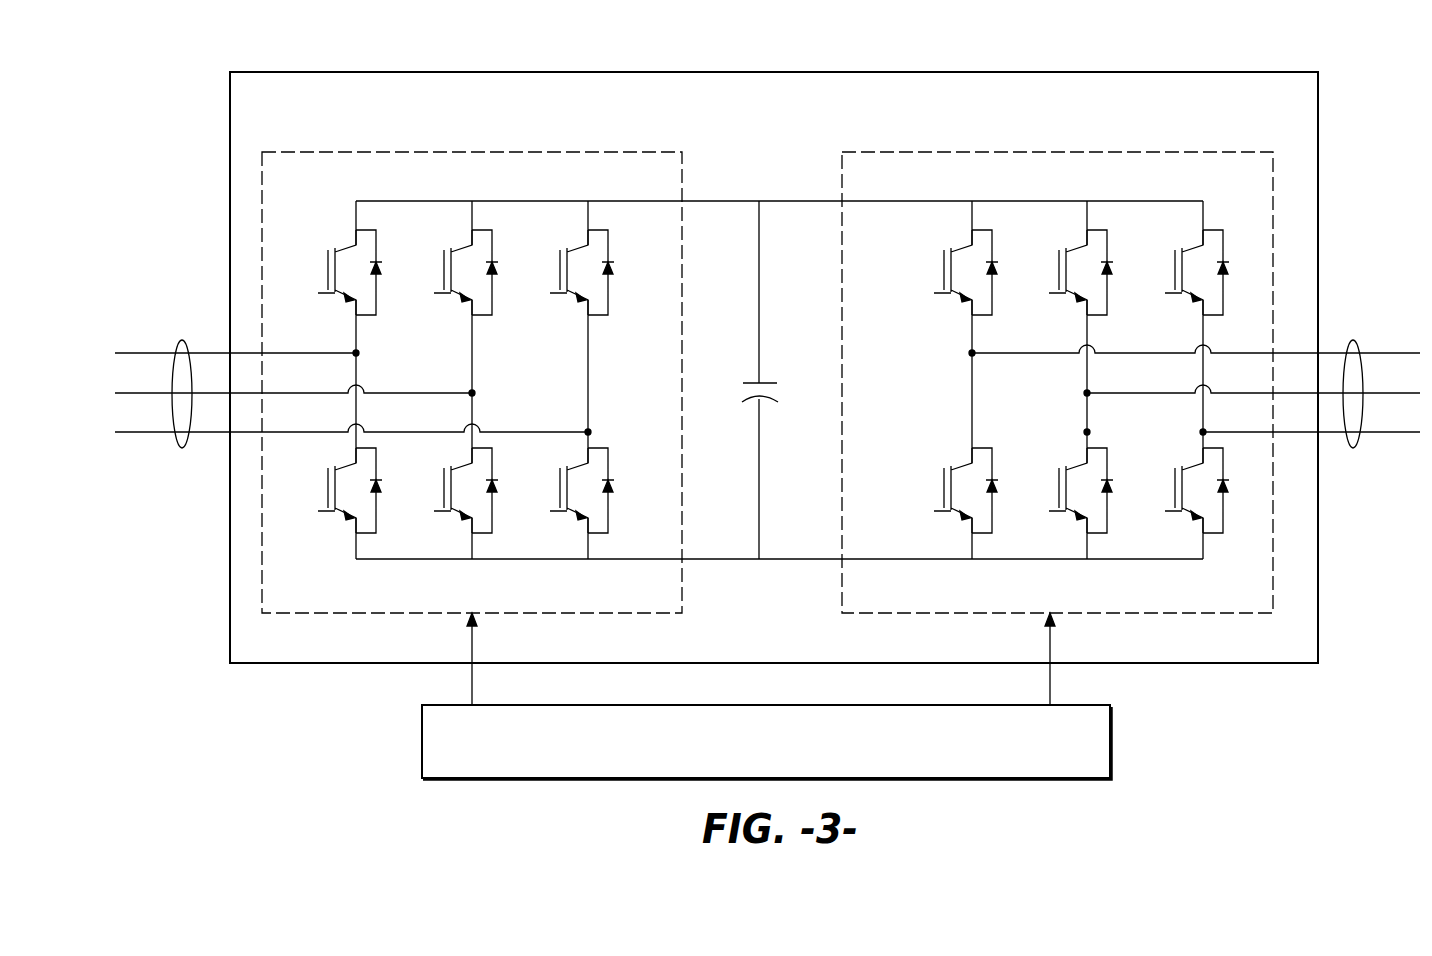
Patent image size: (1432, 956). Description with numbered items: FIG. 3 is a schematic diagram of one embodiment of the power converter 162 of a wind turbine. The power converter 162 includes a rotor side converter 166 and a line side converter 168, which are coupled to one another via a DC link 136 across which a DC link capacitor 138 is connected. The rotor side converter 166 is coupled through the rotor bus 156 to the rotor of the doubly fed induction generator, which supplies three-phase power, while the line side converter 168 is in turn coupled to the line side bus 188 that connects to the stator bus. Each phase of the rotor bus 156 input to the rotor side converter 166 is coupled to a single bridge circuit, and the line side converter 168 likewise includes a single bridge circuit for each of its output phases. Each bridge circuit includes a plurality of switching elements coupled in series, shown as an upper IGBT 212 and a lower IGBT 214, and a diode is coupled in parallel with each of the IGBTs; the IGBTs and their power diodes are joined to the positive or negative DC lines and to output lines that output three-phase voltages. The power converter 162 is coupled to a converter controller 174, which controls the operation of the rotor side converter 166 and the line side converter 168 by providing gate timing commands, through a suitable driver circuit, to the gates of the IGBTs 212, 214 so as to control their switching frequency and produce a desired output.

The power converter 162 is at (868, 72).
The line side converter 168 is at (476, 152).
The rotor side converter 166 is at (1157, 152).
The DC link 136 is at (720, 201).
The DC link capacitor 138 is at (765, 383).
The line side bus 188 is at (182, 340).
The rotor bus 156 is at (1353, 340).
The upper IGBT 212 is at (936, 270).
The lower IGBT 214 is at (936, 492).
The converter controller 174 is at (1118, 748).